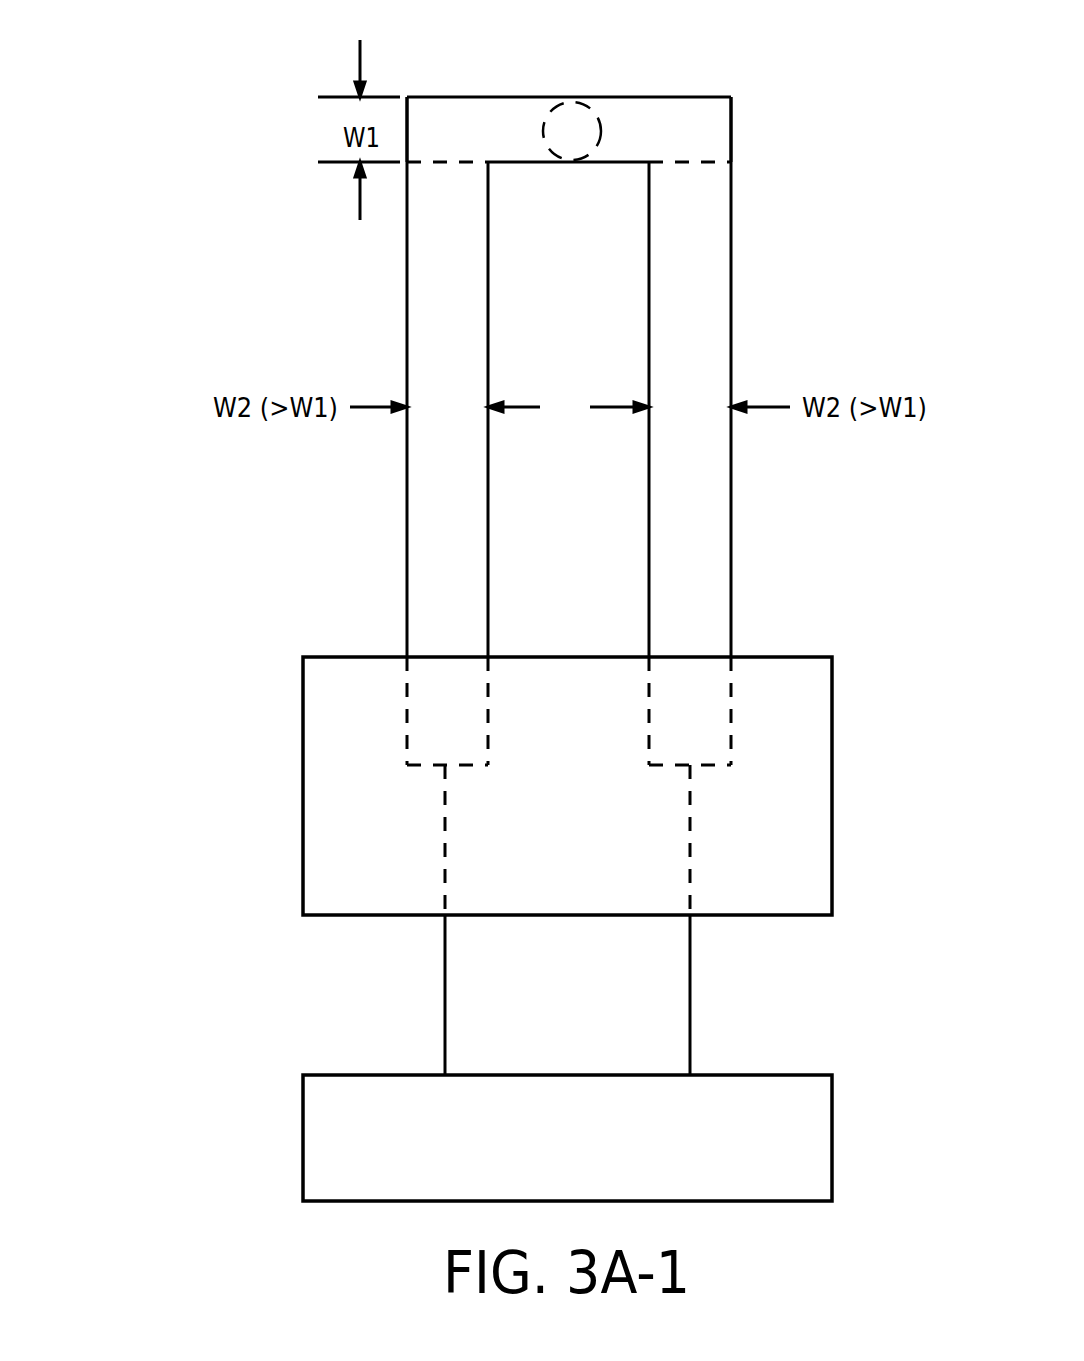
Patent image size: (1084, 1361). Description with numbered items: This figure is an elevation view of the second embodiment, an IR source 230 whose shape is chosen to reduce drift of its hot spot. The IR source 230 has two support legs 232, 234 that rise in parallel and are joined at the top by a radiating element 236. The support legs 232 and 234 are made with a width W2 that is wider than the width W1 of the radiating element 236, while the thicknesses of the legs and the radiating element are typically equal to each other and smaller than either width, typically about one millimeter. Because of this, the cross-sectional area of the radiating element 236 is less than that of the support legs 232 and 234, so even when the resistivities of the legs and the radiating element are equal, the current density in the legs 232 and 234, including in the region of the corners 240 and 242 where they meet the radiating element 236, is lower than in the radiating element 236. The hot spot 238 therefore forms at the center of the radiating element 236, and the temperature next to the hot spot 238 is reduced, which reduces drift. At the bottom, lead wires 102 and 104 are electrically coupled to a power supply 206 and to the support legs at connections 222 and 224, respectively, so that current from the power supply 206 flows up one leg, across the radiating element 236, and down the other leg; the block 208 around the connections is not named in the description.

The lead wire 102 is at (445, 1002).
The lead wire 104 is at (690, 1002).
The power supply 206 is at (303, 1138).
The connection block 208 is at (303, 762).
The connection 222 is at (445, 767).
The connection 224 is at (692, 768).
The IR source 230 is at (192, 332).
The support leg 232 is at (407, 492).
The support leg 234 is at (731, 497).
The radiating element 236 is at (532, 97).
The hot spot 238 is at (577, 120).
The corner 240 is at (480, 120).
The corner 242 is at (698, 118).